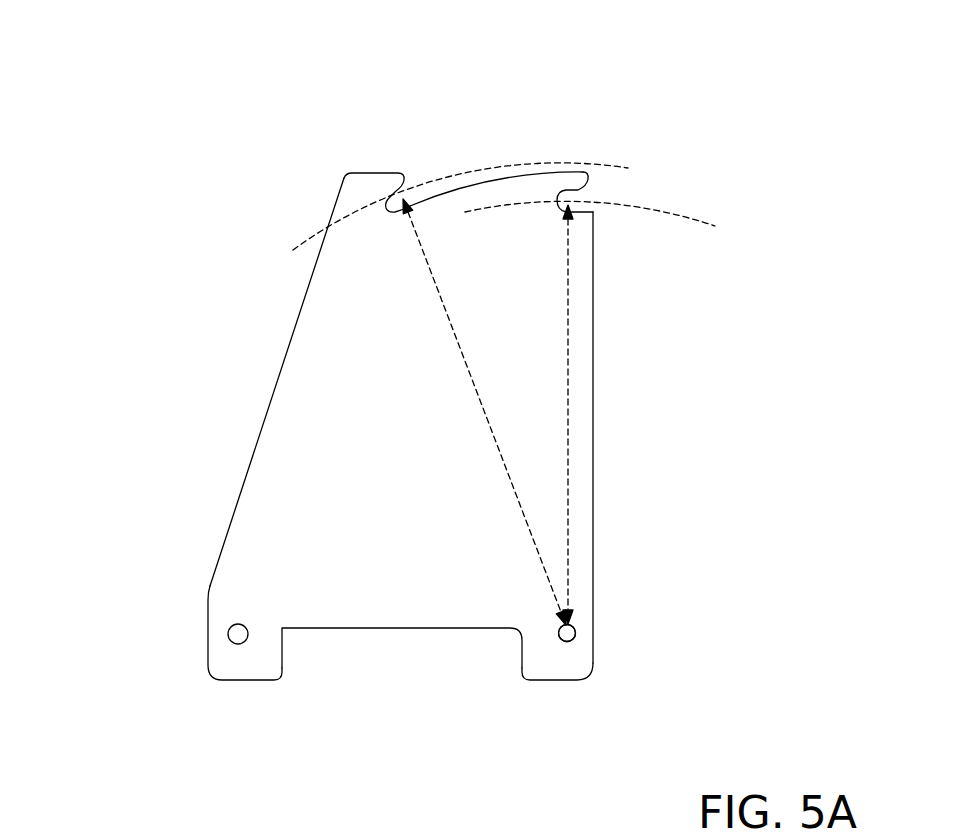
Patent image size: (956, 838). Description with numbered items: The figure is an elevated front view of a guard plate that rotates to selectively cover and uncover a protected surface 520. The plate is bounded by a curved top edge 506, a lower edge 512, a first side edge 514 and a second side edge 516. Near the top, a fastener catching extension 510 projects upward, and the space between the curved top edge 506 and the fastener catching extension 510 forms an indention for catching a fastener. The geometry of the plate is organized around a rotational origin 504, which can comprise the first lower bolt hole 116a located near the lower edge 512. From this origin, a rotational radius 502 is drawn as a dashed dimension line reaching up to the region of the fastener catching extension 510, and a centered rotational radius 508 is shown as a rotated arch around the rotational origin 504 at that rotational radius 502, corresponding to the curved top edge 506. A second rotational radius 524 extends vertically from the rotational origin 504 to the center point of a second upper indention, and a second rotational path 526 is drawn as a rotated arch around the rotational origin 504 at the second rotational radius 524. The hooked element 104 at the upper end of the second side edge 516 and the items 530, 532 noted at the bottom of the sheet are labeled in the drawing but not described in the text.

The hook portion 104 is at (585, 174).
The first lower bolt hole 116a is at (575, 636).
The rotational radius 502 is at (463, 363).
The rotational origin 504 is at (484, 690).
The curved top edge 506 is at (537, 165).
The centered rotational radius 508 is at (427, 190).
The fastener catching extension 510 is at (377, 173).
The lower edge 512 is at (460, 628).
The first side edge 514 is at (251, 453).
The second side edge 516 is at (593, 522).
The protected surface 520 is at (208, 558).
The second rotational radius 524 is at (568, 344).
The second rotational path 526 is at (682, 213).
The reference element 530 is at (465, 826).
The reference element 532 is at (531, 826).